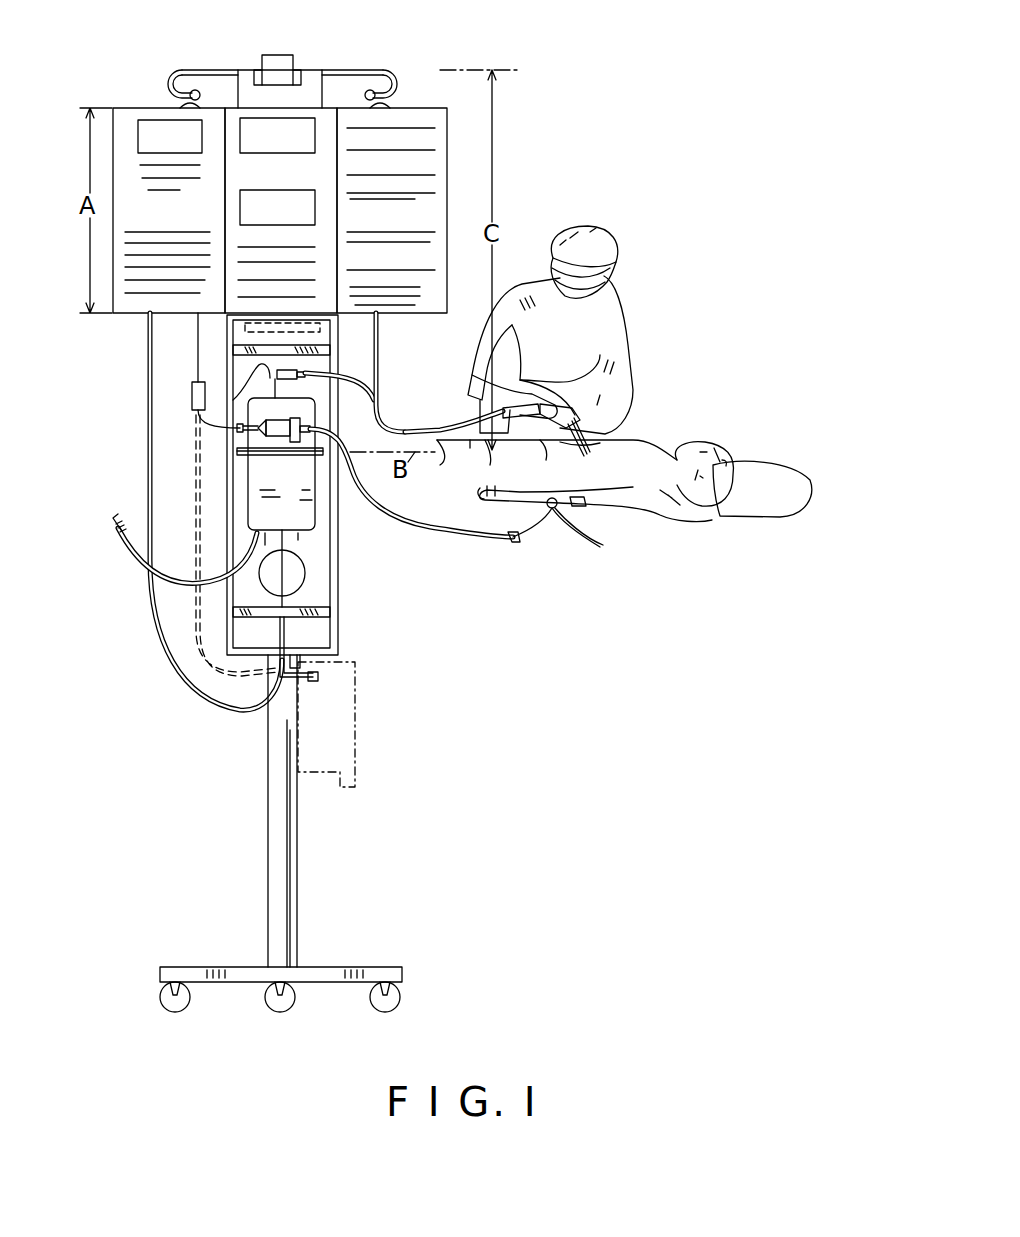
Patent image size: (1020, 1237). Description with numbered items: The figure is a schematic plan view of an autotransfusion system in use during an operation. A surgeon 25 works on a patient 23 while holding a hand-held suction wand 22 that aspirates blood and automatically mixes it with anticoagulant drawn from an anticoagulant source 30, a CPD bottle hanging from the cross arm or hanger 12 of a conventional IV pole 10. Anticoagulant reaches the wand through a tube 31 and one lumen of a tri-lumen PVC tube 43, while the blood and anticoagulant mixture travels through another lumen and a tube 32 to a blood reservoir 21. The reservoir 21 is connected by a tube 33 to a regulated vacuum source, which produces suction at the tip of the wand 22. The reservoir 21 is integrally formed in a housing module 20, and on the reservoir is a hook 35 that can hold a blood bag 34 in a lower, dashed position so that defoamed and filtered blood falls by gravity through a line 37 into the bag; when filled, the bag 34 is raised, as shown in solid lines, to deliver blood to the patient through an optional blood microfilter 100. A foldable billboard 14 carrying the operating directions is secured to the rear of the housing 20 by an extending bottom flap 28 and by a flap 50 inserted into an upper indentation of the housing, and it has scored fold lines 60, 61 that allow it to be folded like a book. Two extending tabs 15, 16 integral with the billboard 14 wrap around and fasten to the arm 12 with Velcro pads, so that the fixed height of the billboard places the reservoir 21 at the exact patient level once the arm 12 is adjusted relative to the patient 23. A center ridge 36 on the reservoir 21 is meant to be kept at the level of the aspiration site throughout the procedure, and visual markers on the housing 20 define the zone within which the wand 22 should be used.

The IV pole 10 is at (285, 867).
The cross arm or hanger 12 is at (350, 72).
The foldable billboard 14 is at (445, 120).
The tab 15 is at (245, 72).
The tab 16 is at (307, 70).
The housing module 20 is at (338, 614).
The blood reservoir 21 is at (315, 530).
The suction wand 22 is at (577, 416).
The patient 23 is at (667, 440).
The surgeon 25 is at (595, 310).
The bottom flap 28 is at (238, 332).
The anticoagulant source 30 is at (393, 96).
The tube 31 is at (383, 386).
The tube 32 is at (363, 385).
The tube 33 is at (133, 550).
The blood bag 34 is at (165, 105).
The hook 35 is at (318, 680).
The center ridge 36 is at (237, 452).
The line 37 is at (285, 620).
The tri-lumen PVC tube 43 is at (410, 432).
The flap 50 is at (303, 359).
The fold line 60 is at (225, 215).
The fold line 61 is at (337, 215).
The blood microfilter 100 is at (278, 432).